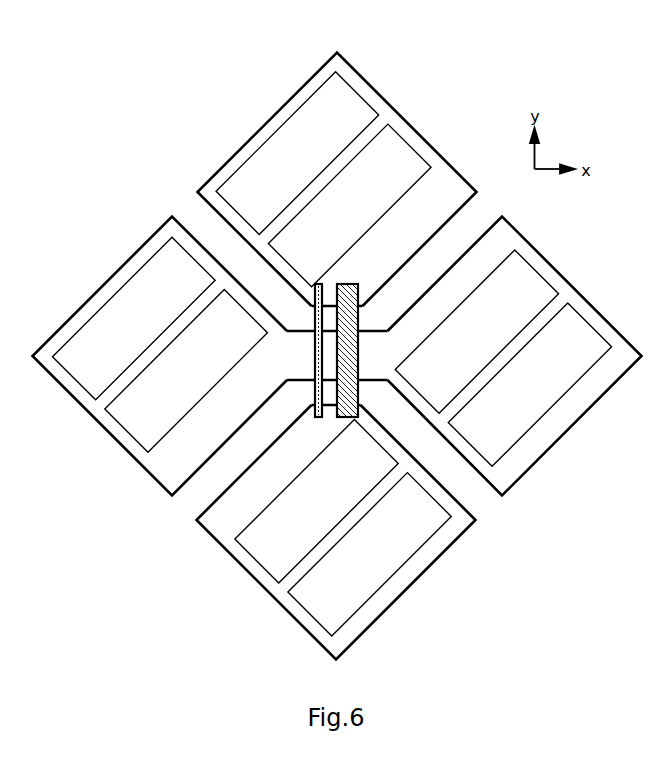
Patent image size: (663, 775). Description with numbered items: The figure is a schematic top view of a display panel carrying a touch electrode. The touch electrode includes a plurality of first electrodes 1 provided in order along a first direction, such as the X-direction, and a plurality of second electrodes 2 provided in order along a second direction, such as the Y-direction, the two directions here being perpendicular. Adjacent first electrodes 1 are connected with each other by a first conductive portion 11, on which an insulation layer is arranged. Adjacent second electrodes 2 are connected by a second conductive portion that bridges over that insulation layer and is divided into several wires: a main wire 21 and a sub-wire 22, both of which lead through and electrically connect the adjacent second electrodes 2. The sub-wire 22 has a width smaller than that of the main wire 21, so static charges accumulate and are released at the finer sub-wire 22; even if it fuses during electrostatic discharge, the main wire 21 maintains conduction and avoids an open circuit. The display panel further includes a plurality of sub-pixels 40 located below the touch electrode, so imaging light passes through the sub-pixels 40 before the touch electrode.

The first electrode 1 is at (337, 366).
The second electrode 2 is at (248, 140).
The first conductive portion 11 is at (375, 330).
The main wire 21 is at (348, 344).
The sub-wire 22 is at (318, 358).
The sub-pixel 40 is at (142, 267).